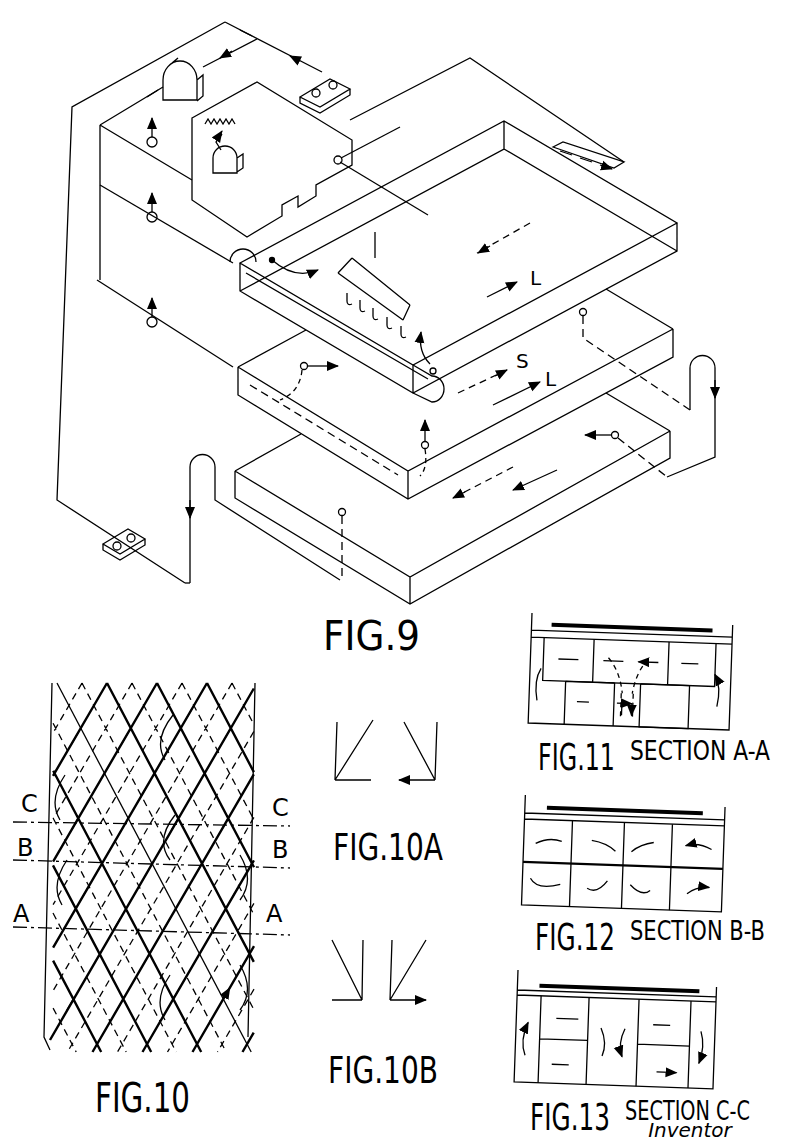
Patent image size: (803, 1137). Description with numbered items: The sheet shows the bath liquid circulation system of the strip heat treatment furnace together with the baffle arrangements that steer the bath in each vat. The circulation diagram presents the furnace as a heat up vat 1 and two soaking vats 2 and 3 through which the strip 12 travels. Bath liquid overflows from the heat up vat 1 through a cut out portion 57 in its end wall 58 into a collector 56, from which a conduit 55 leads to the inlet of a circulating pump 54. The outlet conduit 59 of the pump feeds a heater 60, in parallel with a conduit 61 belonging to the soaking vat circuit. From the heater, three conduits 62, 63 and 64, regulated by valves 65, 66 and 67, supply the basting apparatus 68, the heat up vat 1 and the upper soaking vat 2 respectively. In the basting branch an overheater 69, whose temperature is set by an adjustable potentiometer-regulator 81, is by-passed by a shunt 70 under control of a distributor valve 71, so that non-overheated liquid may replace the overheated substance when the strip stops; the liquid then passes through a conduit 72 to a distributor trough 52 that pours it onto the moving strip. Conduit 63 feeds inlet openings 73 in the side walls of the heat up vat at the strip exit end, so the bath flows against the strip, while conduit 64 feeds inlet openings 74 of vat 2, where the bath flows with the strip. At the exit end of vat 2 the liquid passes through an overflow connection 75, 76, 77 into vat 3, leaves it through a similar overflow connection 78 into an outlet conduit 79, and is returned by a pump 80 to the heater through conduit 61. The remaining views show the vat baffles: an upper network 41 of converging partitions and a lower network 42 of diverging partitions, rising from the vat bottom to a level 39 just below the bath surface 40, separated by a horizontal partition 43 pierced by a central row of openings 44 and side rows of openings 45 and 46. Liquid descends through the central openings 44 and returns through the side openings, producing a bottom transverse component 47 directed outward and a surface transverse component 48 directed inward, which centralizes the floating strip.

In FIG. 9, the heat up vat 1 is at (679, 243).
In FIG. 9, the upper soaking vat 2 is at (676, 346).
In FIG. 9, the soaking vat 3 is at (670, 444).
In FIG. 11, the strip 12 is at (660, 623).
In FIG. 12, the strip 12 is at (636, 813).
In FIG. 13, the strip 12 is at (625, 984).
In FIG. 11, the level 39 is at (530, 634).
In FIG. 11, the surface of the bath 40 is at (532, 617).
In FIG. 11, the upper network of baffles 41 is at (532, 657).
In FIG. 12, the upper network of baffles 41 is at (525, 828).
In FIG. 11, the lower network of baffles 42 is at (565, 700).
In FIG. 12, the lower network of baffles 42 is at (575, 893).
In FIG. 11, the horizontal partition 43 is at (695, 690).
In FIG. 12, the horizontal partition 43 is at (527, 862).
In FIG. 13, the horizontal partition 43 is at (680, 1040).
In FIG. 10, the central openings 44 is at (152, 867).
In FIG. 13, the central openings 44 is at (614, 1042).
In FIG. 10, the side openings 45 is at (56, 742).
In FIG. 13, the side openings 45 is at (520, 1068).
In FIG. 10, the side openings 46 is at (258, 753).
In FIG. 13, the side openings 46 is at (700, 1075).
In FIG. 10B, the transverse component 47 is at (375, 988).
In FIG. 10A, the transverse component 48 is at (387, 768).
In FIG. 9, the distributor trough 52 is at (405, 307).
In FIG. 9, the pump 54 is at (340, 80).
In FIG. 9, the conduit 55 is at (488, 68).
In FIG. 9, the collector 56 is at (630, 182).
In FIG. 9, the cut out portion 57 is at (556, 145).
In FIG. 9, the end wall 58 is at (652, 214).
In FIG. 9, the outlet conduit 59 is at (270, 45).
In FIG. 9, the heater 60 is at (178, 58).
In FIG. 9, the conduit 61 is at (120, 80).
In FIG. 9, the conduit 62 is at (147, 138).
In FIG. 9, the conduit 63 is at (135, 204).
In FIG. 9, the conduit 64 is at (124, 296).
In FIG. 9, the valve 65 is at (165, 152).
In FIG. 9, the valve 66 is at (147, 220).
In FIG. 9, the valve 67 is at (151, 328).
In FIG. 9, the basting apparatus 68 is at (268, 148).
In FIG. 9, the overheater 69 is at (240, 170).
In FIG. 9, the shunt 70 is at (294, 180).
In FIG. 9, the distributor valve 71 is at (365, 138).
In FIG. 9, the conduit 72 is at (423, 212).
In FIG. 9, the inlet openings 73 is at (271, 267).
In FIG. 9, the inlet openings 74 is at (307, 372).
In FIG. 9, the overflow connection 75 is at (590, 312).
In FIG. 9, the overflow connection 76 is at (722, 362).
In FIG. 9, the overflow connection 77 is at (617, 440).
In FIG. 9, the overflow connection 78 is at (190, 458).
In FIG. 9, the outlet conduit 79 is at (190, 562).
In FIG. 9, the pump 80 is at (125, 555).
In FIG. 9, the potentiometer-regulator 81 is at (222, 112).